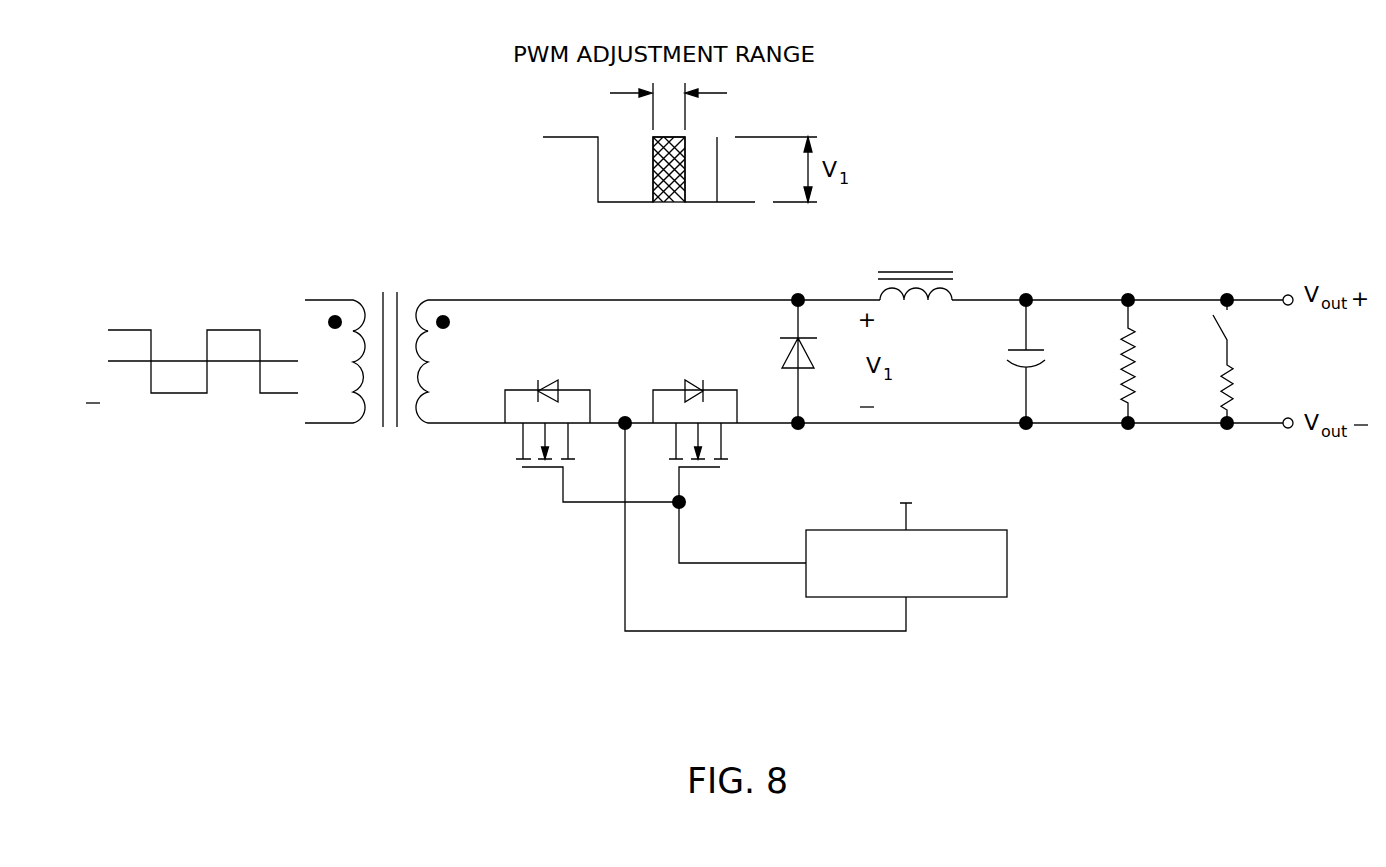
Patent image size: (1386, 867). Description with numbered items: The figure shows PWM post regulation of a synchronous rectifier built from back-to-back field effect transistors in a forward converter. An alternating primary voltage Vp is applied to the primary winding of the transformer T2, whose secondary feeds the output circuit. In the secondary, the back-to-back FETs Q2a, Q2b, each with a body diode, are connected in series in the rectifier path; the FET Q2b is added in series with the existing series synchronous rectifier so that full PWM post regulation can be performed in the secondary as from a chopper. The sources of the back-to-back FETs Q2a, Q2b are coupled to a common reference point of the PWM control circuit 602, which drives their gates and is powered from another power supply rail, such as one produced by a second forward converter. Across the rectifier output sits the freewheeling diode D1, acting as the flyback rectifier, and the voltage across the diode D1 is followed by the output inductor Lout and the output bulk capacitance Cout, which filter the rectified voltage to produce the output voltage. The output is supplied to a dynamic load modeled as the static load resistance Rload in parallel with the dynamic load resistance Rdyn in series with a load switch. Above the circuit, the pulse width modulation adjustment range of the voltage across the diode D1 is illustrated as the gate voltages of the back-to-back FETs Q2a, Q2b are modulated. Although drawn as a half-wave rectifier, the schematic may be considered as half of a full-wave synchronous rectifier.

The PWM control circuit 602 is at (1007, 548).
The transformer T2 is at (377, 339).
The back-to-back FET Q2a is at (592, 422).
The back-to-back FET Q2b is at (729, 453).
The freewheeling diode D1 is at (782, 361).
The output inductor Lout is at (915, 268).
The output bulk capacitance Cout is at (1051, 361).
The static load resistance Rload is at (1157, 361).
The dynamic load resistance Rdyn is at (1252, 361).
The primary voltage Vp is at (179, 350).